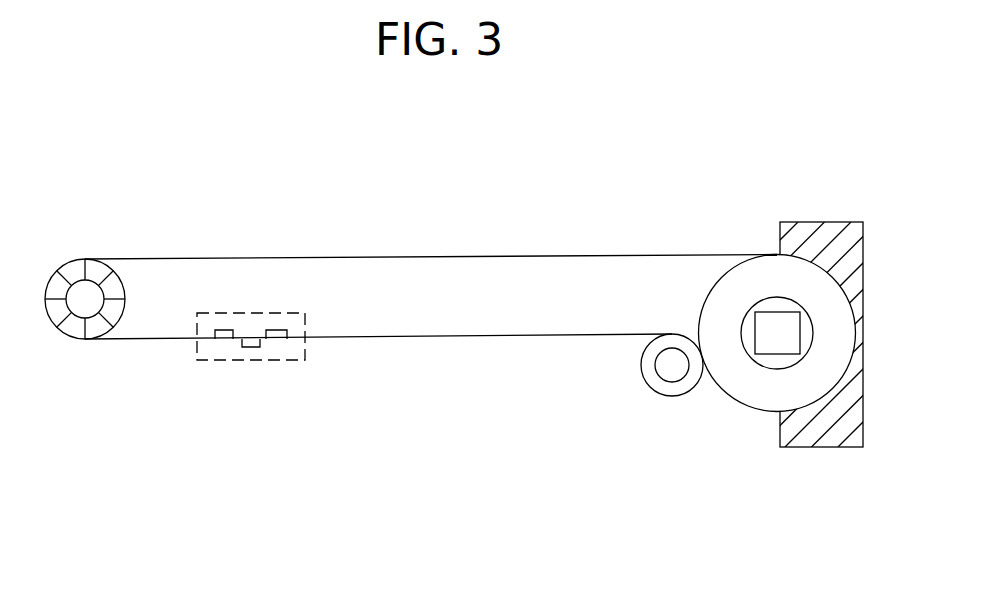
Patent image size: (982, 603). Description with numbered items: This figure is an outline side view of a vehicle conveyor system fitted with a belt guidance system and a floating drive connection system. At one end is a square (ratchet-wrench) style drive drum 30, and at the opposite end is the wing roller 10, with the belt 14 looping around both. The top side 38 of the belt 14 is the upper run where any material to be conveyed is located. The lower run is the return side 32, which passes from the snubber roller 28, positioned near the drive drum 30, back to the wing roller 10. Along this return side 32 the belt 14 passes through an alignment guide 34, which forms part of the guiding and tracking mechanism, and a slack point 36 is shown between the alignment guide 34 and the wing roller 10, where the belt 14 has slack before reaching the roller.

The wing roller 10 is at (85, 299).
The belt 14 is at (431, 323).
The snubber roller 28 is at (665, 382).
The square style drive drum 30 is at (760, 392).
The return side 32 is at (502, 336).
The alignment guide 34 is at (243, 313).
The slack point 36 is at (137, 338).
The top side 38 is at (523, 257).